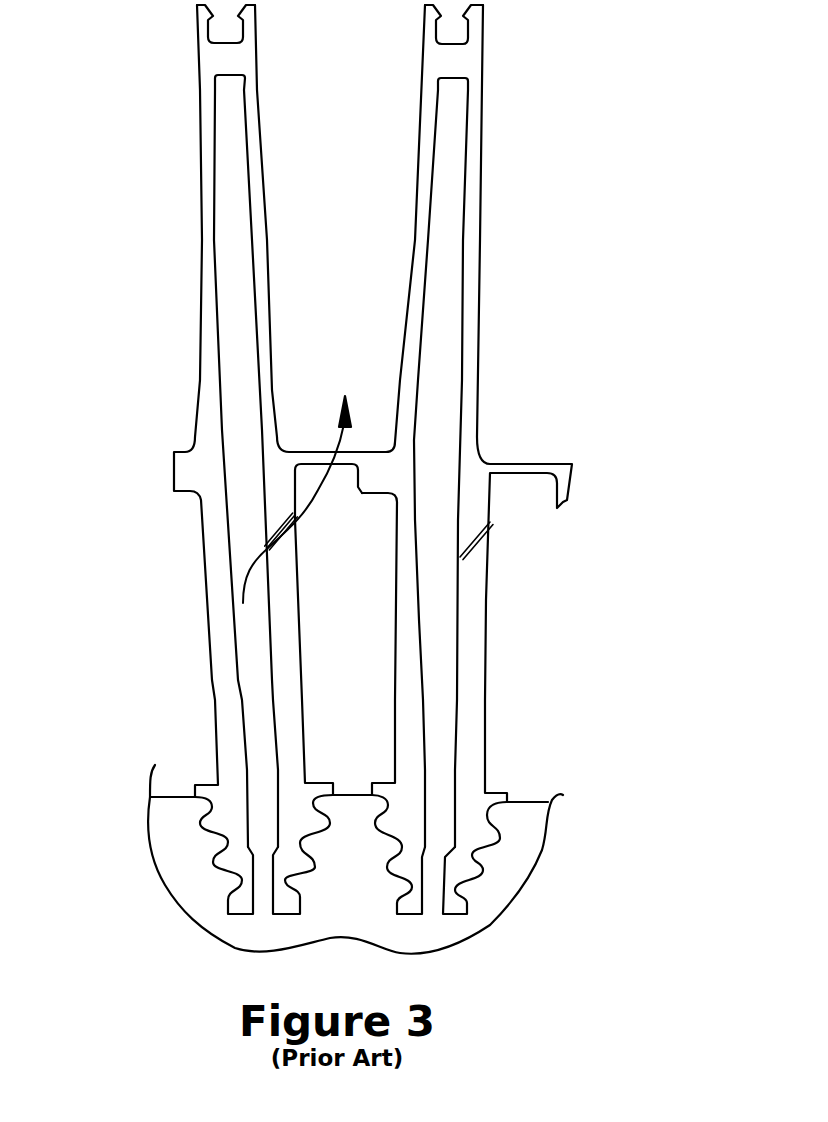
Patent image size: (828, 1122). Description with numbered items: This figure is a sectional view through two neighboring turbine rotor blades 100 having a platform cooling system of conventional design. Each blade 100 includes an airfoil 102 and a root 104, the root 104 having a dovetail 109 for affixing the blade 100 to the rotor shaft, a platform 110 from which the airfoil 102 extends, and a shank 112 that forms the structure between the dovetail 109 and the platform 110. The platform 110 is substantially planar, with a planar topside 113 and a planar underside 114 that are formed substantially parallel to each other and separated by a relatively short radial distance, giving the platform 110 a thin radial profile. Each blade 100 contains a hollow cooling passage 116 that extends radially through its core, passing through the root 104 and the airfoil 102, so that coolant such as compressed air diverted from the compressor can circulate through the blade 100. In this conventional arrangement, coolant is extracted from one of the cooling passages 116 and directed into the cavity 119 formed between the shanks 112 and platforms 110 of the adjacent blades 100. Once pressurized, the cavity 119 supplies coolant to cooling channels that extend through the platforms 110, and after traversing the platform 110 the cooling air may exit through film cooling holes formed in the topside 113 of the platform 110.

The turbine rotor blade 100 is at (296, 212).
The airfoil 102 is at (201, 277).
The root 104 is at (592, 711).
The dovetail 109 is at (470, 870).
The platform 110 is at (322, 452).
The shank 112 is at (160, 671).
The topside 113 is at (372, 482).
The underside 114 is at (342, 465).
The cooling passage 116 is at (233, 516).
The cavity 119 is at (371, 627).